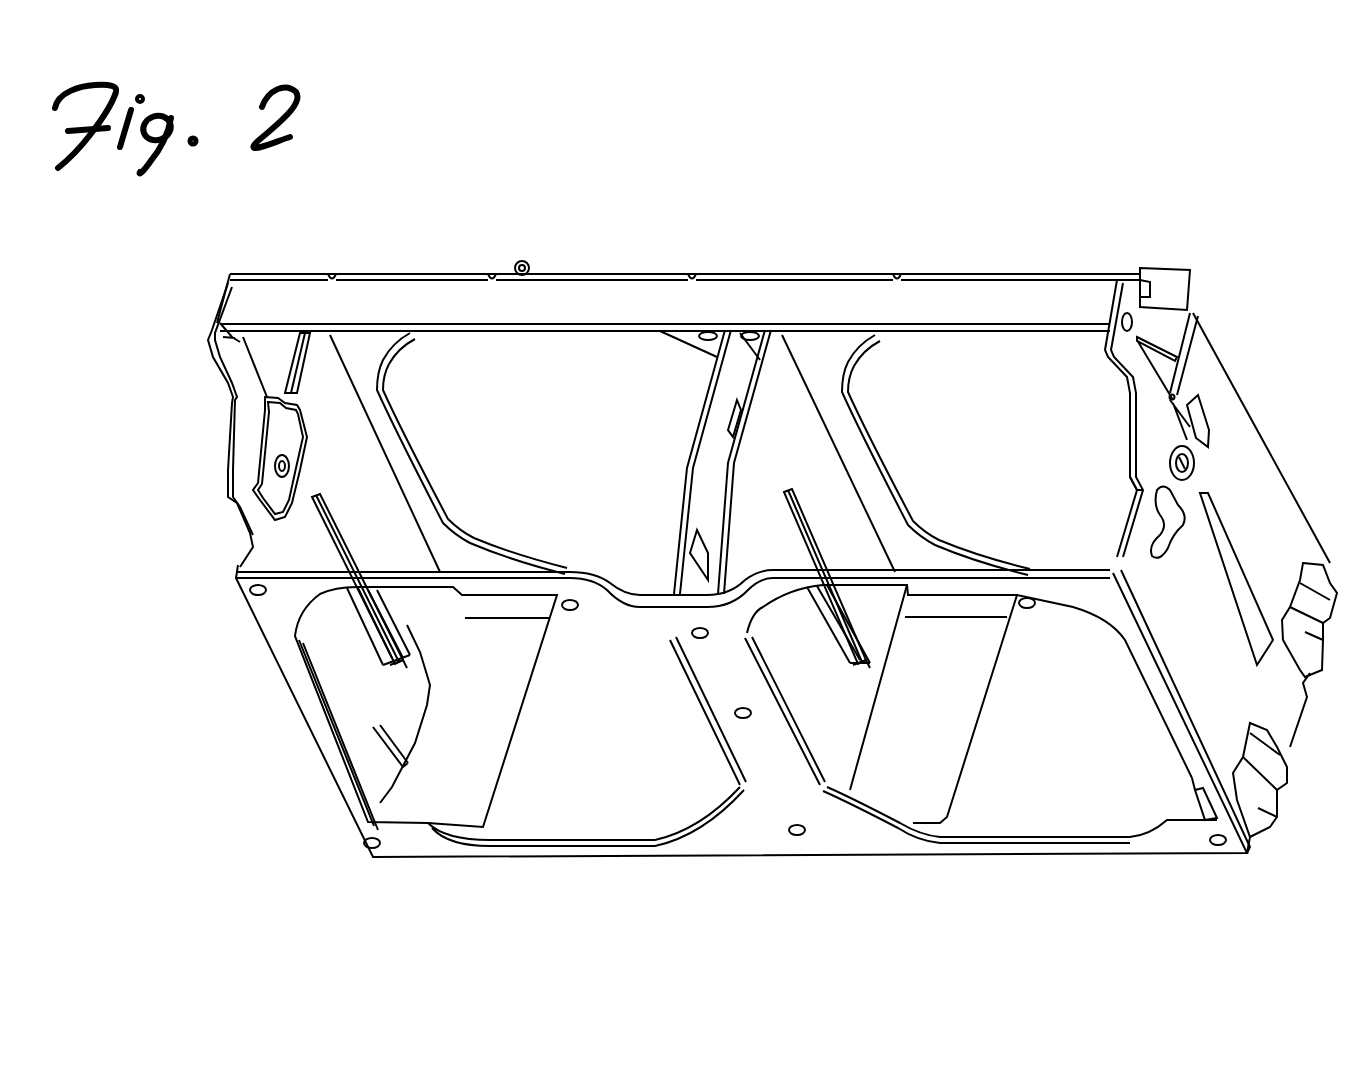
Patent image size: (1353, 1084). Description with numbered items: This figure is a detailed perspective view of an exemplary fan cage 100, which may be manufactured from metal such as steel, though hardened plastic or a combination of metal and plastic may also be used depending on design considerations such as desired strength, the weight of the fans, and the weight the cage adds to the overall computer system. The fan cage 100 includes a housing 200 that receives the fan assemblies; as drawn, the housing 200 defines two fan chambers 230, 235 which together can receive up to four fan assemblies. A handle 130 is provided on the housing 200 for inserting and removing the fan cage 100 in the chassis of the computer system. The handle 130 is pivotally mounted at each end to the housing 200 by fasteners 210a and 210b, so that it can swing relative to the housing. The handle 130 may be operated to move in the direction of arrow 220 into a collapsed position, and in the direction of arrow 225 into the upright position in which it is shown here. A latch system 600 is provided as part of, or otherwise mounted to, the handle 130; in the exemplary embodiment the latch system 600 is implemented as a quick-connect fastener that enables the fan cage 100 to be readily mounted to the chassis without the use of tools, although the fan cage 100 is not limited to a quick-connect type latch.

The fan cage 100 is at (1240, 227).
The handle 130 is at (845, 290).
The housing 200 is at (850, 857).
The fastener 210a is at (290, 471).
The fastener 210b is at (1194, 467).
The arrow 220 is at (133, 493).
The arrow 225 is at (70, 400).
The fan chamber 230 is at (473, 441).
The fan chamber 235 is at (937, 440).
The latch system 600 is at (1137, 490).